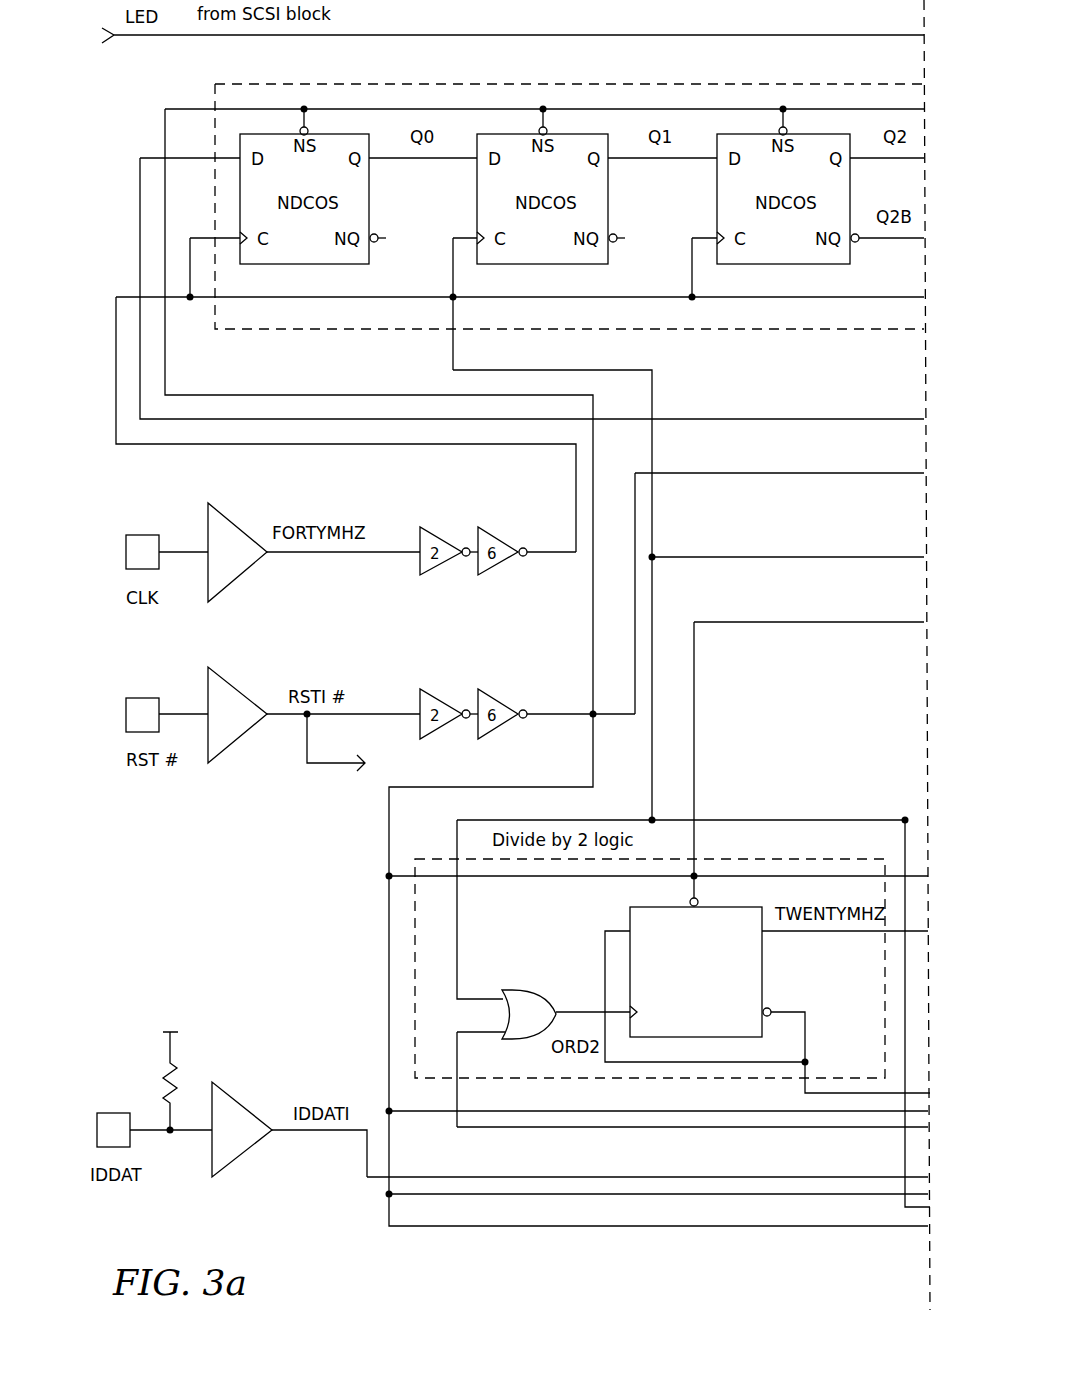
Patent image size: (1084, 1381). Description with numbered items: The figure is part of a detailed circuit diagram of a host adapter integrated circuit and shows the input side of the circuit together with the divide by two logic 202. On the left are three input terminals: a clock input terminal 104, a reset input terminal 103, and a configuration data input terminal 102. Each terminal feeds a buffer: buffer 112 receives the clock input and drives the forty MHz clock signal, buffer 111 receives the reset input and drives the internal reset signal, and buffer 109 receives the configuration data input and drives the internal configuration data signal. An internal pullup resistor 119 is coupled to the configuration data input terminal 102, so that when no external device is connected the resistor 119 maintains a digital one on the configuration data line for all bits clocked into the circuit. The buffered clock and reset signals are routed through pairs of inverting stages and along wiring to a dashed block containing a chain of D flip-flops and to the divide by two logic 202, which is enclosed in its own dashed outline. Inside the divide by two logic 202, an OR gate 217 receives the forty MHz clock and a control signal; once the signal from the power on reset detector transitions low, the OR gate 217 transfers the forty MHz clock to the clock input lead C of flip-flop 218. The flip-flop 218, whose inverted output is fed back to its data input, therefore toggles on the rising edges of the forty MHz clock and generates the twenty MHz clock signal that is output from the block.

The configuration data input terminal 102 is at (112, 1113).
The reset input terminal 103 is at (141, 698).
The clock input terminal 104 is at (141, 535).
The buffer 109 is at (243, 1155).
The buffer 111 is at (238, 740).
The buffer 112 is at (238, 577).
The internal pullup resistor 119 is at (173, 1050).
The divide by two logic 202 is at (431, 858).
The OR gate 217 is at (513, 990).
The flip-flop 218 is at (630, 914).